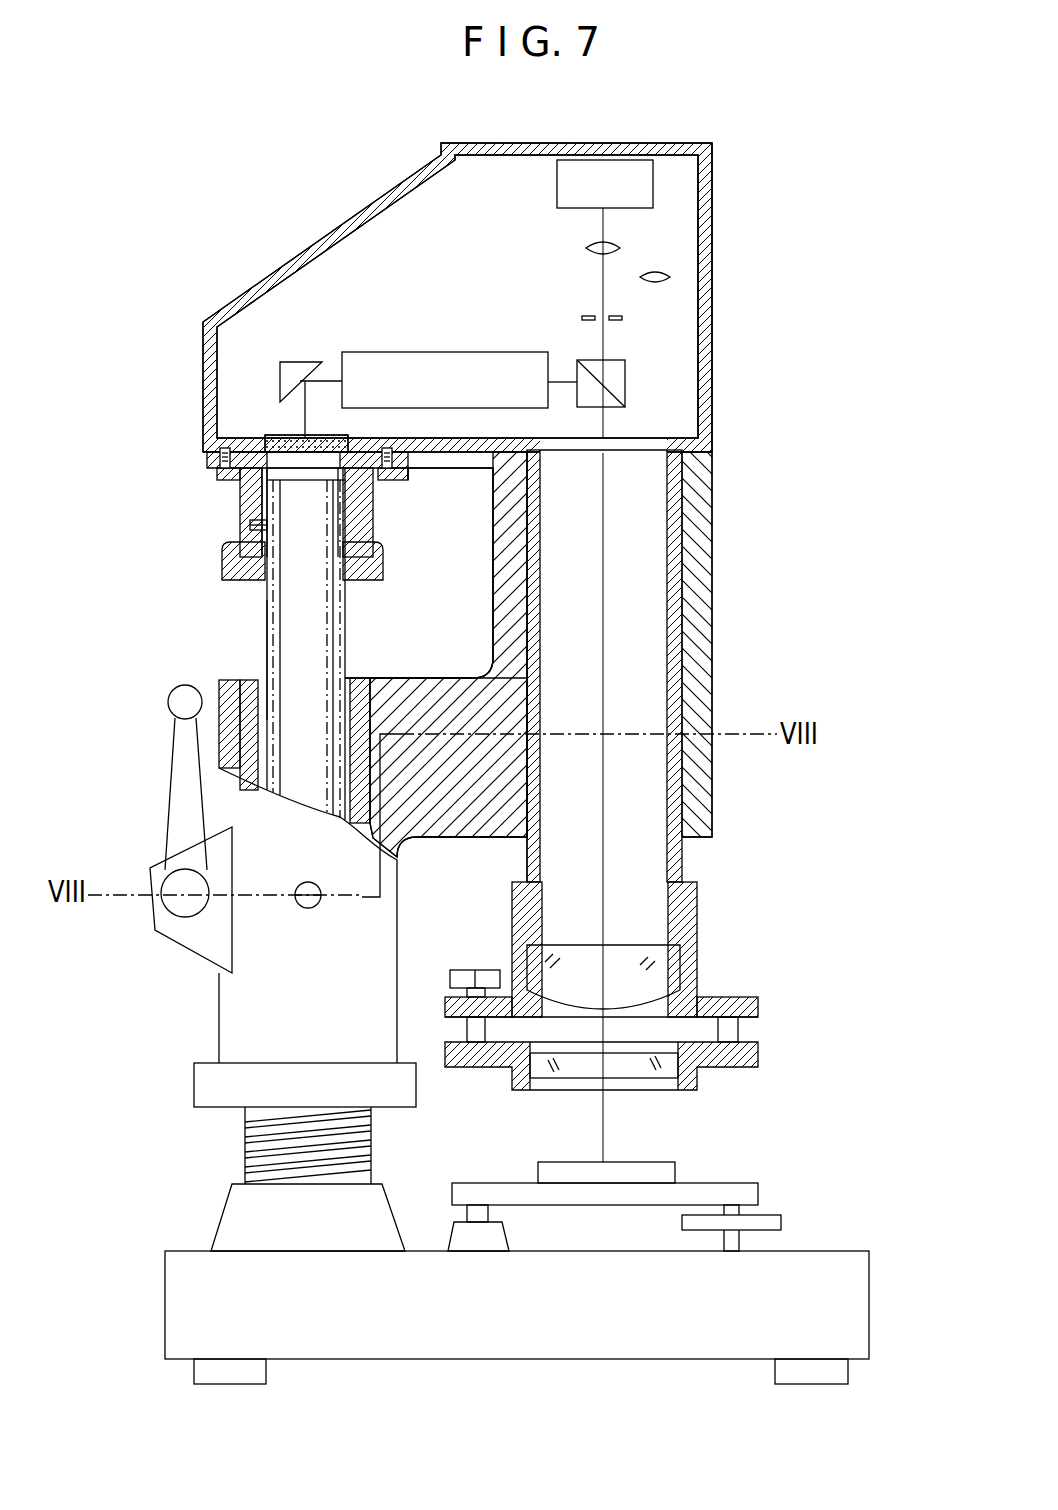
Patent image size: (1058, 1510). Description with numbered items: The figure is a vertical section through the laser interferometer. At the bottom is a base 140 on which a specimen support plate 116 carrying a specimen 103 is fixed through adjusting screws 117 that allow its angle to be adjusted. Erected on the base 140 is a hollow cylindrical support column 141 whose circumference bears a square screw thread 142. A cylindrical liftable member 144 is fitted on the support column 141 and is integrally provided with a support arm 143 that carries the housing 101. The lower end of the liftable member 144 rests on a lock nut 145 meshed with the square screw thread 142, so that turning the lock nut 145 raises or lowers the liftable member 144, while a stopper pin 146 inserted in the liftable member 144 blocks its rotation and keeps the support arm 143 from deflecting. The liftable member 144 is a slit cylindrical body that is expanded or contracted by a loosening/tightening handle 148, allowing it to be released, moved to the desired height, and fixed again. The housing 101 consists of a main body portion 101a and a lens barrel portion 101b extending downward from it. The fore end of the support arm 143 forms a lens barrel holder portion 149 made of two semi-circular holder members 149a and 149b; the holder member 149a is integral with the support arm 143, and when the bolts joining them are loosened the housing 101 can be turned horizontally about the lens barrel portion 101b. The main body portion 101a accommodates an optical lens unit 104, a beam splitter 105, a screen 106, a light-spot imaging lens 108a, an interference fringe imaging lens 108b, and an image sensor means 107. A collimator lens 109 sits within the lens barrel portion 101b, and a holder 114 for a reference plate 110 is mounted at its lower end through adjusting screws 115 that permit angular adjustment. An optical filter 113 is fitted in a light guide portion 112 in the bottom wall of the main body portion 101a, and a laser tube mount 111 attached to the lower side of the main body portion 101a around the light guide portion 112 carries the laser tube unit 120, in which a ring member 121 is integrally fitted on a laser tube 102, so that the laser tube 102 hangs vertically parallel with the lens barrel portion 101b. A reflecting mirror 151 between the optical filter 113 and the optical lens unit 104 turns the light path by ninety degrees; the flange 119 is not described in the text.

The housing 101 is at (728, 242).
The main body portion 101a is at (713, 342).
The lens barrel portion 101b is at (684, 570).
The laser tube 102 is at (283, 628).
The specimen 103 is at (563, 1167).
The optical lens unit 104 is at (437, 368).
The beam splitter 105 is at (625, 382).
The screen 106 is at (583, 316).
The image sensor means 107 is at (563, 172).
The light-spot imaging lens 108a is at (587, 247).
The interference fringe imaging lens 108b is at (657, 268).
The collimator lens 109 is at (660, 968).
The reference plate 110 is at (673, 1070).
The laser tube mount 111 is at (240, 500).
The light guide portion 112 is at (280, 435).
The optical filter 113 is at (322, 436).
The holder 114 is at (760, 1048).
The adjusting screws 115 is at (471, 970).
The specimen support plate 116 is at (760, 1193).
The adjusting screws 117 is at (783, 1222).
The flange 119 is at (225, 570).
The laser tube unit 120 is at (250, 658).
The ring member 121 is at (247, 552).
The base 140 is at (508, 1360).
The support column 141 is at (233, 740).
The square screw thread 142 is at (245, 1140).
The support arm 143 is at (418, 700).
The liftable member 144 is at (245, 1005).
The lock nut 145 is at (195, 1085).
The stopper pin 146 is at (320, 905).
The loosening/tightening handle 148 is at (180, 795).
The lens barrel holder portion 149 is at (480, 548).
The holder member 149a is at (495, 597).
The holder member 149b is at (712, 660).
The reflecting mirror 151 is at (285, 362).